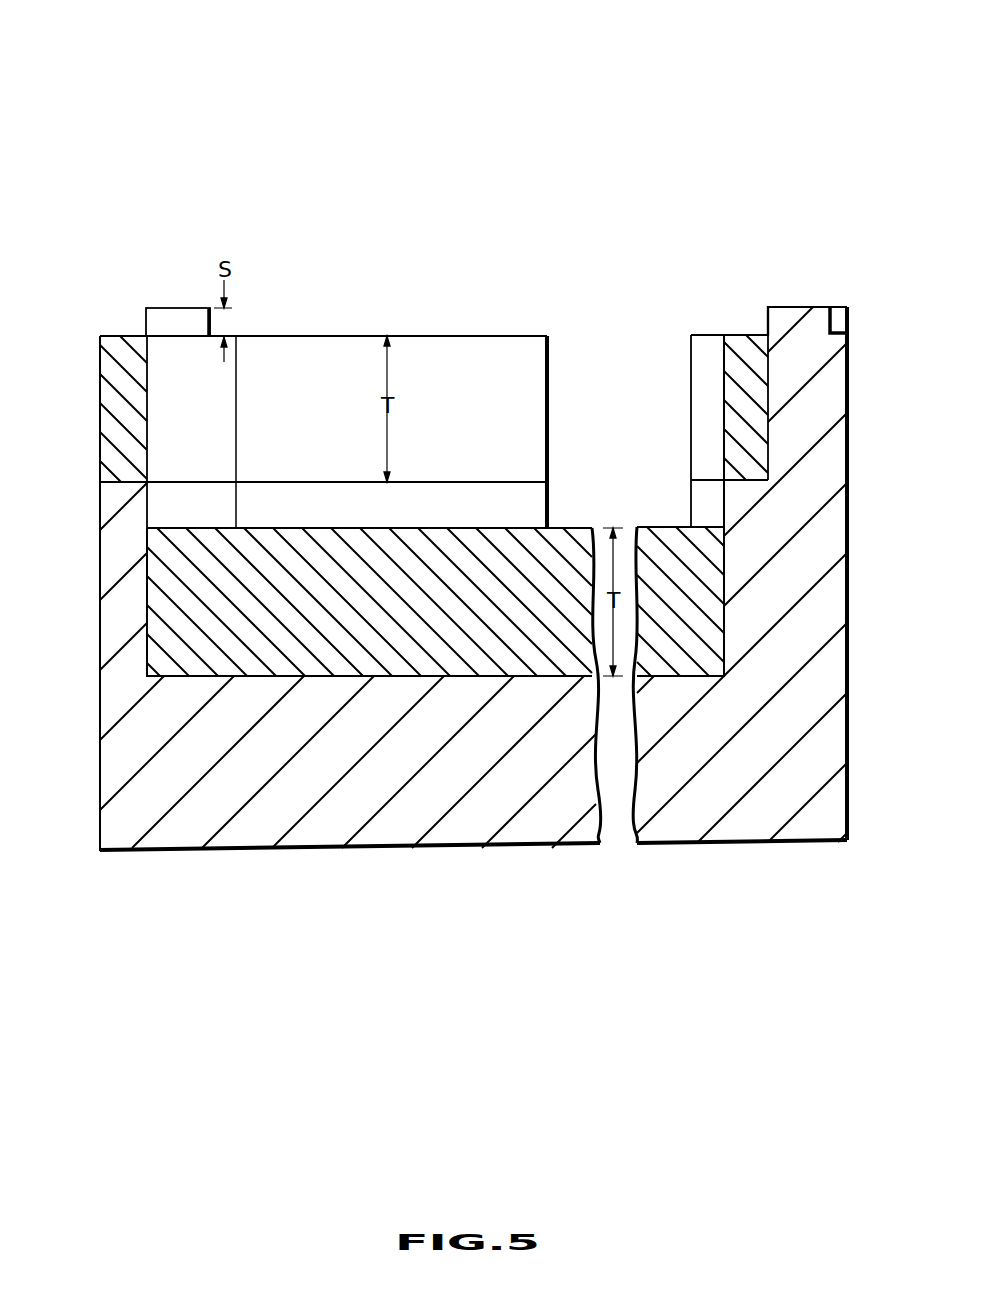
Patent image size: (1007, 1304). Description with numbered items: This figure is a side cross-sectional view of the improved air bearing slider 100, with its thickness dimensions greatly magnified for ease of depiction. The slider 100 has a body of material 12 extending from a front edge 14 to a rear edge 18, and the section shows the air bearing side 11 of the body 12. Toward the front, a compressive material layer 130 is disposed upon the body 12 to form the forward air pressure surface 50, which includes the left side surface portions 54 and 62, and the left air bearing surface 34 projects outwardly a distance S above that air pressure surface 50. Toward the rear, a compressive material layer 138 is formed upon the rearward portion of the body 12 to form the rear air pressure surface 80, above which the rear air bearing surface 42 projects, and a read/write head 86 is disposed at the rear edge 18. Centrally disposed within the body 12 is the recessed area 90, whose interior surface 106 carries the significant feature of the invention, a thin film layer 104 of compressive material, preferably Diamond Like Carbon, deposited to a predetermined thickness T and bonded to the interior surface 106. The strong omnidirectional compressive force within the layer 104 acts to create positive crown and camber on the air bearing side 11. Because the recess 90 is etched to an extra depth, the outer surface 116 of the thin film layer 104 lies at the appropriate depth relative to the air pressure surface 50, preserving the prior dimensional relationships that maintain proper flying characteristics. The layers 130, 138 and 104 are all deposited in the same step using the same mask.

The slider 100 is at (565, 48).
The air bearing side 11 is at (492, 317).
The recessed area 90 is at (618, 330).
The body of material 12 is at (530, 507).
The front edge 14 is at (108, 556).
The compressive material layer 130 is at (112, 393).
The air pressure surface 50 is at (112, 335).
The left side leg portion 62 is at (435, 334).
The left air bearing surface 34 is at (178, 306).
The leftward portion 54 is at (232, 333).
The outer surface 116 is at (300, 528).
The thin film layer 104 is at (180, 625).
The interior surface 106 is at (420, 672).
The rear edge 18 is at (848, 742).
The compressive material layer 138 is at (705, 390).
The rear air pressure surface 80 is at (737, 333).
The rear air bearing surface 42 is at (797, 305).
The read/write head 86 is at (838, 307).